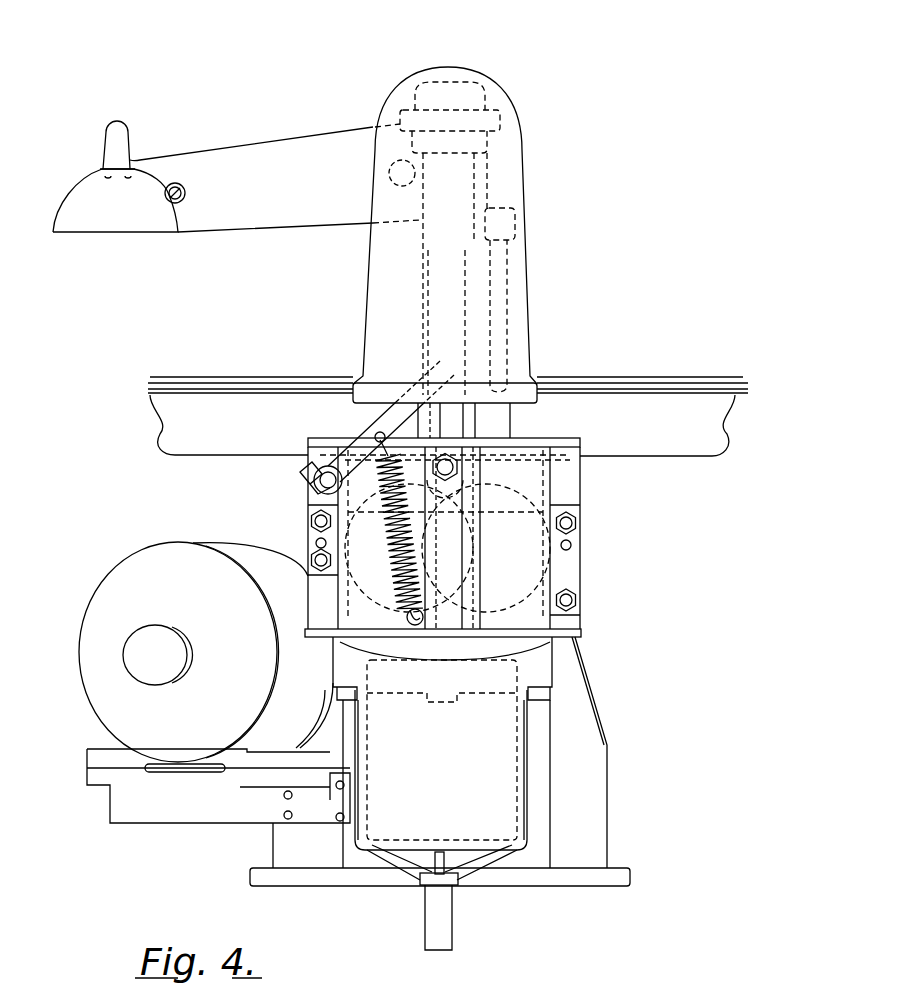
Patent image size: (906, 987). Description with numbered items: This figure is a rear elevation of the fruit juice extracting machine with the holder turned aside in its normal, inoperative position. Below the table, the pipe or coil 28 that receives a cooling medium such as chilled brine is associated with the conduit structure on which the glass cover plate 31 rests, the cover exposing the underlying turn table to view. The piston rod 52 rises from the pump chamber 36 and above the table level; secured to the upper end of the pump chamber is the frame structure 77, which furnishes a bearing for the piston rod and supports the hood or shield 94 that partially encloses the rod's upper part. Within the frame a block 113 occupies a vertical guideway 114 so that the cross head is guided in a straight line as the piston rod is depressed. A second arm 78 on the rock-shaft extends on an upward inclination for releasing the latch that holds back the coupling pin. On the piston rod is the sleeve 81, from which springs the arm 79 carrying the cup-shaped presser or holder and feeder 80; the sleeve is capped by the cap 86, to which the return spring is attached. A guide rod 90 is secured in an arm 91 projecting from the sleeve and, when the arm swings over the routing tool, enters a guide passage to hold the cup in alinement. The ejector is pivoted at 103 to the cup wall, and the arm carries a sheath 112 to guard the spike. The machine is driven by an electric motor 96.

The pipe or coil 28 is at (203, 443).
The cover plate 31 is at (215, 378).
The pump chamber 36 is at (440, 793).
The piston rod 52 is at (455, 318).
The frame structure 77 is at (527, 558).
The second arm 78 is at (380, 410).
The arm 79 is at (250, 150).
The cup-shaped presser or holder and feeder 80 is at (76, 200).
The sleeve 81 is at (438, 215).
The cap 86 is at (483, 90).
The guide rod 90 is at (503, 272).
The arm 91 is at (508, 222).
The hood or shield 94 is at (525, 342).
The electric motor 96 is at (125, 588).
The pivot 103 is at (188, 191).
The sheath 112 is at (120, 133).
The block 113 is at (487, 558).
The vertical guideway 114 is at (545, 548).